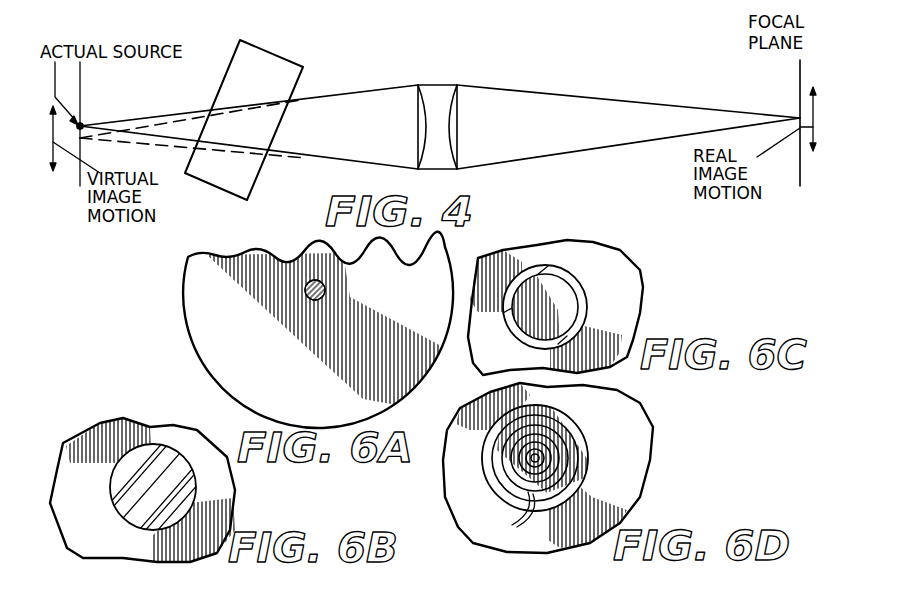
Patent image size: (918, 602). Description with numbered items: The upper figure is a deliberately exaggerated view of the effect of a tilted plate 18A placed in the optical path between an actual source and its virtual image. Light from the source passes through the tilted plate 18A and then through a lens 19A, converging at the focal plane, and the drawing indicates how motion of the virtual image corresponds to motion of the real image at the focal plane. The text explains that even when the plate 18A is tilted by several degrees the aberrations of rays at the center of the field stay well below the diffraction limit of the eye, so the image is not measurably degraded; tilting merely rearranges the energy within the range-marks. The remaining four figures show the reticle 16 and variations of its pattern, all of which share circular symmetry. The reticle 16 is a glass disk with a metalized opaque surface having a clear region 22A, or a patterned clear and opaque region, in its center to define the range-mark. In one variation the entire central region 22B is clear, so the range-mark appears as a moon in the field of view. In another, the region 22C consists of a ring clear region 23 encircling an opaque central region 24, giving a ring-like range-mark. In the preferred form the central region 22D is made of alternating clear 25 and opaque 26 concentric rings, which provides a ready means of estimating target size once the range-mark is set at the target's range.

In FIG. 6A, the reticle 16 is at (192, 344).
In FIG. 6B, the reticle 16 is at (90, 442).
In FIG. 6C, the reticle 16 is at (638, 288).
In FIG. 6D, the reticle 16 is at (632, 412).
In FIG. 4, the tilted plate 18A is at (228, 68).
In FIG. 4, the lens 19A is at (409, 118).
In FIG. 6A, the clear region 22A is at (328, 287).
In FIG. 6B, the central region 22B is at (168, 463).
In FIG. 6C, the region 22C is at (549, 254).
In FIG. 6D, the central region 22D is at (572, 403).
In FIG. 6C, the ring clear region 23 is at (583, 291).
In FIG. 6C, the opaque central region 24 is at (527, 333).
In FIG. 6D, the clear concentric rings 25 is at (532, 459).
In FIG. 6D, the opaque concentric rings 26 is at (510, 513).